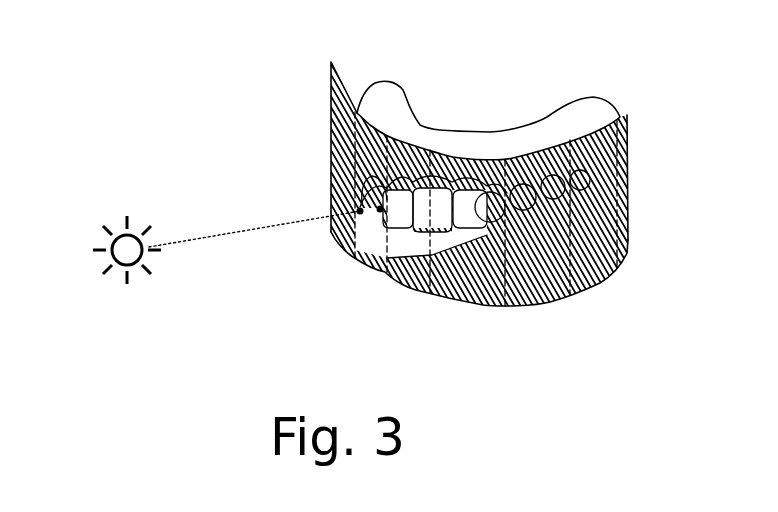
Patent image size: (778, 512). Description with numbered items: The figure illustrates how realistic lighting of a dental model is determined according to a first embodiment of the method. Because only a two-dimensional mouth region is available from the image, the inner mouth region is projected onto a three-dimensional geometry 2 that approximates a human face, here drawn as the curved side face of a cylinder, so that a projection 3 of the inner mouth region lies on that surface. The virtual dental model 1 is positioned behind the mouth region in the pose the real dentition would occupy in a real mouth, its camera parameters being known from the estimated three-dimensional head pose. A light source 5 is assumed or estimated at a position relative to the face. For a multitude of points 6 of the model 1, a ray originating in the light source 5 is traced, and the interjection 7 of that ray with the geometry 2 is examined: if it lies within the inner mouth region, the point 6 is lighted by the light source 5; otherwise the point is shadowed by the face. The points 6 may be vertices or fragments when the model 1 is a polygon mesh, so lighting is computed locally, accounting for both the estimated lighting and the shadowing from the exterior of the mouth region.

The virtual dental model 1 is at (543, 114).
The 3D geometry 2 is at (615, 278).
The projection of the inner mouth region 3 is at (463, 297).
The light source 5 is at (115, 220).
The points of the model 6 is at (377, 208).
The interjection of a ray 7 is at (357, 211).